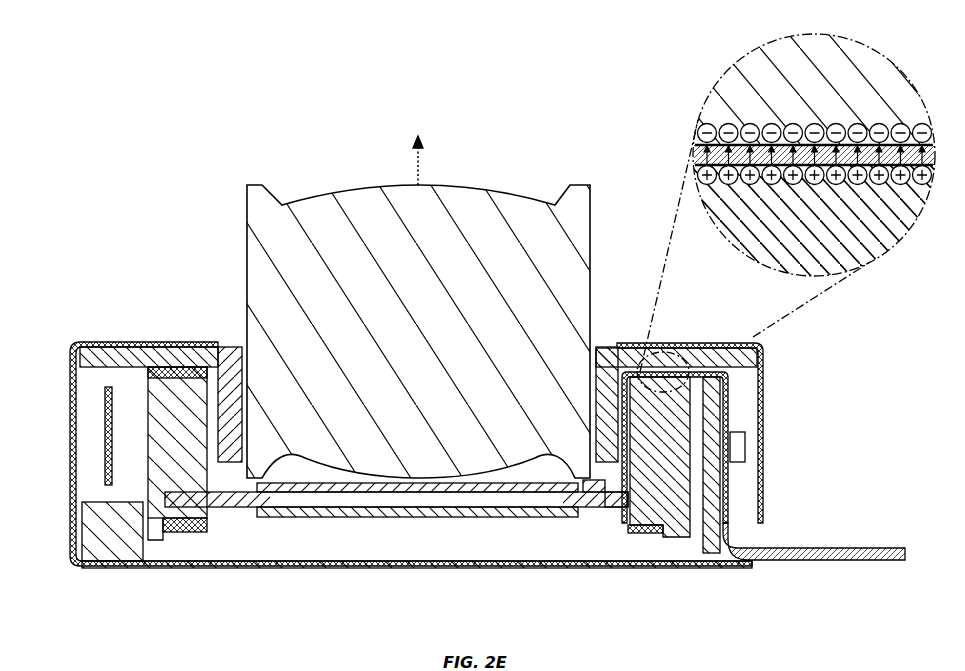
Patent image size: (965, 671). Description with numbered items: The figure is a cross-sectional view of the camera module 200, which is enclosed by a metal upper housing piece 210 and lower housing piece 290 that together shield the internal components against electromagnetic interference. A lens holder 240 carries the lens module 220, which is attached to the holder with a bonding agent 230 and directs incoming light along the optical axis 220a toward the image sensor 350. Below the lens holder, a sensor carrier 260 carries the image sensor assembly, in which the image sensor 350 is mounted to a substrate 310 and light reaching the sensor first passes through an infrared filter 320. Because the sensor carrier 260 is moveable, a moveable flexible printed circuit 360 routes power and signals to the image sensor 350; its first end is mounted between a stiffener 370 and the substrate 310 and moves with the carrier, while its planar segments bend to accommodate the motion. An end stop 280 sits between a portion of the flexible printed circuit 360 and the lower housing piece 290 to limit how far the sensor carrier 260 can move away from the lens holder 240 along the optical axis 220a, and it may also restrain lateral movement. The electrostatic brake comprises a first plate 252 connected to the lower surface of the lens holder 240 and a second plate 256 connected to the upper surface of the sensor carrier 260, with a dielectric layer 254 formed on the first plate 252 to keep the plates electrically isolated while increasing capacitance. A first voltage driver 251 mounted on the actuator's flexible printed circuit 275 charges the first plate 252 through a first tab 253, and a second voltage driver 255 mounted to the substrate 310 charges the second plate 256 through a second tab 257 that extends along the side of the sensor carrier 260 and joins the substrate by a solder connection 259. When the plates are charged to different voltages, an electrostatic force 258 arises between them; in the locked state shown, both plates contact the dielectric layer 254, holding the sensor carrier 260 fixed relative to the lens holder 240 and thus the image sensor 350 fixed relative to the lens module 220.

The camera module 200 is at (91, 180).
The upper housing piece 210 is at (97, 342).
The lens module 220 is at (590, 233).
The optical axis 220a is at (422, 162).
The bonding agent 230 is at (232, 347).
The lens holder 240 is at (142, 347).
The first voltage driver 251 is at (745, 437).
The first plate 252 is at (846, 46).
The first tab 253 is at (732, 395).
The dielectric layer 254 is at (700, 155).
The second voltage driver 255 is at (603, 492).
The second plate 256 is at (880, 250).
The second tab 257 is at (640, 456).
The electrostatic force 258 is at (716, 130).
The solder connection 259 is at (617, 507).
The sensor carrier 260 is at (148, 438).
The flexible printed circuit 275 is at (737, 500).
The end stop 280 is at (82, 508).
The lower housing piece 290 is at (113, 568).
The substrate 310 is at (238, 507).
The infrared filter 320 is at (300, 492).
The image sensor 350 is at (345, 517).
The flexible printed circuit 360 is at (106, 402).
The stiffener 370 is at (654, 533).